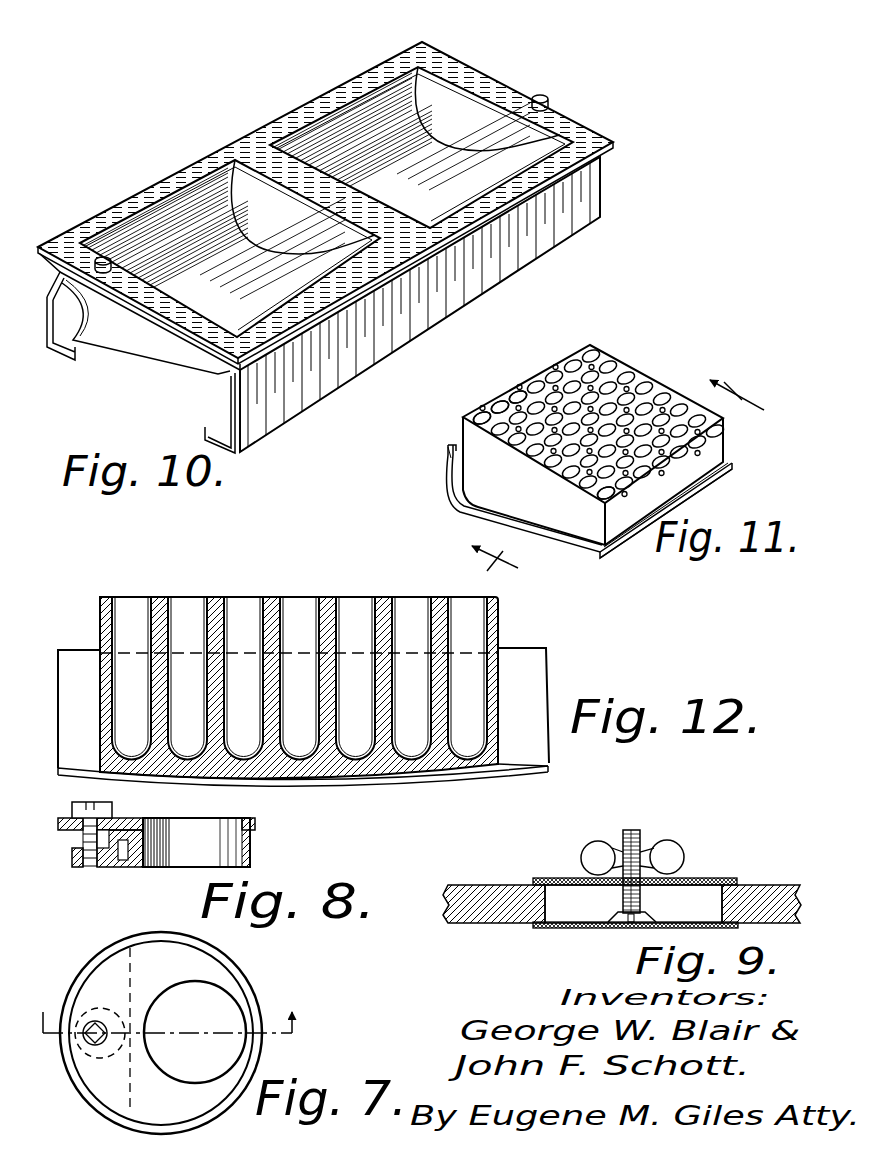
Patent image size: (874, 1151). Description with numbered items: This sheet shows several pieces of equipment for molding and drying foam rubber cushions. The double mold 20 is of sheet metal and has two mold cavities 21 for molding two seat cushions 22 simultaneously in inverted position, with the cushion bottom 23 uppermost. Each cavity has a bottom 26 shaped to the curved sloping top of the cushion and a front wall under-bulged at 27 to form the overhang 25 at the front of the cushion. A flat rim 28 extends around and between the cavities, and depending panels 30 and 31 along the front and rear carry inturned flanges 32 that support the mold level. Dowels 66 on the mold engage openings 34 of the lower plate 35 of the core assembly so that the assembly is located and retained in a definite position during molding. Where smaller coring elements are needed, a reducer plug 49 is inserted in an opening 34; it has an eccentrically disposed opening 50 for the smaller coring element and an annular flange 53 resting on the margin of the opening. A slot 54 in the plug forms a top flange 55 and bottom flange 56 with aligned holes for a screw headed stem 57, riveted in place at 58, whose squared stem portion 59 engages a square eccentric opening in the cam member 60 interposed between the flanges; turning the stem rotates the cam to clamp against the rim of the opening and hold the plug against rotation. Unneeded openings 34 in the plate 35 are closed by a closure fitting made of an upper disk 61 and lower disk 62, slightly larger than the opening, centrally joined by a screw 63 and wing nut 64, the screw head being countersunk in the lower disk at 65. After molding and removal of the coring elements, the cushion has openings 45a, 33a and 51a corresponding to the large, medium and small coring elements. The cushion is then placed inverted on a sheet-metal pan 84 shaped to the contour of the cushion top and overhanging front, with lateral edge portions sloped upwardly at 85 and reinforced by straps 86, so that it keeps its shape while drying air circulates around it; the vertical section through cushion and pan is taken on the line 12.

In FIG. 10, the mold 20 is at (350, 234).
In FIG. 10, the mold cavities 21 is at (354, 122).
In FIG. 11, the seat cushions 22 is at (549, 525).
In FIG. 12, the seat cushions 22 is at (325, 681).
In FIG. 11, the cushion bottom 23 is at (633, 397).
In FIG. 12, the cushion bottom 23 is at (153, 600).
In FIG. 11, the overhang 25 is at (447, 467).
In FIG. 10, the bottom of mold cavity 26 is at (233, 277).
In FIG. 10, the under-bulged front wall 27 is at (192, 228).
In FIG. 10, the flat rim 28 is at (160, 190).
In FIG. 10, the front depending panel 30 is at (47, 310).
In FIG. 10, the rear depending panel 31 is at (600, 185).
In FIG. 10, the inturned flanges 32 is at (75, 352).
In FIG. 11, the openings 33a is at (597, 474).
In FIG. 12, the openings 33a is at (354, 610).
In FIG. 9, the openings 34 is at (674, 900).
In FIG. 9, the lower plate 35 is at (485, 898).
In FIG. 11, the openings 45a is at (524, 390).
In FIG. 8, the reducer plug 49 is at (183, 869).
In FIG. 7, the reducer plug 49 is at (180, 1033).
In FIG. 8, the eccentrically disposed opening 50 is at (185, 853).
In FIG. 7, the eccentrically disposed opening 50 is at (220, 997).
In FIG. 11, the openings 51a is at (699, 443).
In FIG. 8, the annular flange 53 is at (256, 822).
In FIG. 8, the slot 54 is at (160, 829).
In FIG. 8, the top flange 55 is at (109, 833).
In FIG. 8, the bottom flange 56 is at (108, 868).
In FIG. 8, the screw headed stem 57 is at (75, 808).
In FIG. 8, the rivet 58 is at (85, 870).
In FIG. 7, the rivet 58 is at (100, 1033).
In FIG. 8, the squared stem portion 59 is at (72, 867).
In FIG. 8, the cam member 60 is at (126, 866).
In FIG. 9, the upper disk 61 is at (553, 880).
In FIG. 9, the lower disk 62 is at (557, 929).
In FIG. 9, the screw 63 is at (634, 831).
In FIG. 9, the wing nut 64 is at (673, 851).
In FIG. 9, the countersink 65 is at (622, 916).
In FIG. 10, the dowels 66 is at (549, 100).
In FIG. 11, the pan 84 is at (636, 546).
In FIG. 12, the pan 84 is at (555, 673).
In FIG. 11, the sloped lateral edge portions 85 is at (575, 553).
In FIG. 12, the sloped lateral edge portions 85 is at (484, 774).
In FIG. 12, the straps 86 is at (524, 768).
In FIG. 11, the section line 12— 12 is at (611, 470).